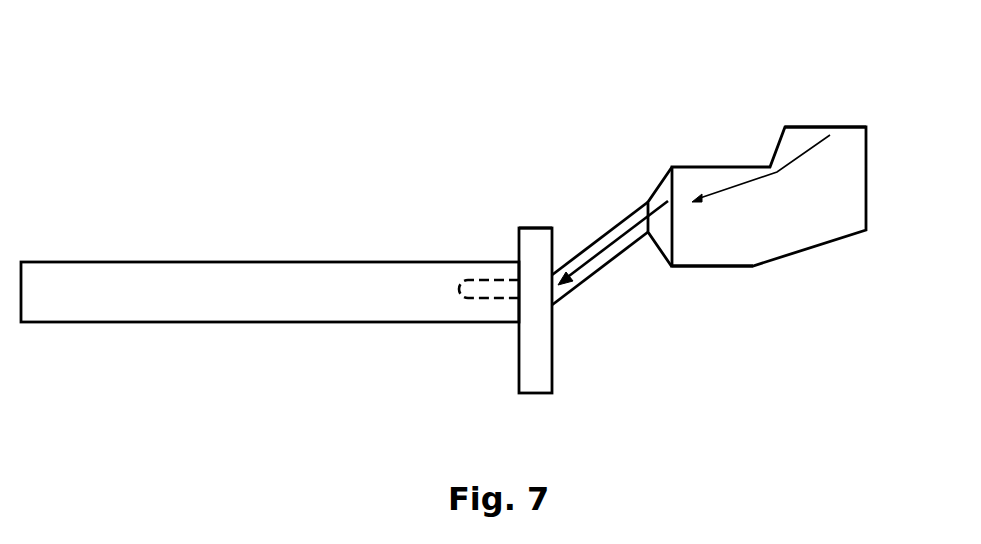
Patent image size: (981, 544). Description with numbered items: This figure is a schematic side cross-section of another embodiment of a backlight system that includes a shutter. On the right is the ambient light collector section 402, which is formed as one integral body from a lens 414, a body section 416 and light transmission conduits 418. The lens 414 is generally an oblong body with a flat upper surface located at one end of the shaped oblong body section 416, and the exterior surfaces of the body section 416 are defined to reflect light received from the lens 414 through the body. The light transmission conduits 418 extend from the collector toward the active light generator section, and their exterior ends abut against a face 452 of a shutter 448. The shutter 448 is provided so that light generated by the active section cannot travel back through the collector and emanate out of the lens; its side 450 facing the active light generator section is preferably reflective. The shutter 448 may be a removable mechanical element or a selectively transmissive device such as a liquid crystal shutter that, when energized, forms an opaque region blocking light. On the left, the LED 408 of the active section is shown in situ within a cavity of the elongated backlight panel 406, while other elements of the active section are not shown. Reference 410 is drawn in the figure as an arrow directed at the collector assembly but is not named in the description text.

The ambient light collector section 402 is at (825, 227).
The backlight panel 406 is at (144, 298).
The LED 408 is at (475, 300).
The instrument 410 is at (824, 109).
The lens 414 is at (857, 143).
The body section 416 is at (710, 243).
The light transmission conduits 418 is at (602, 257).
The shutter 448 is at (540, 381).
The reflective side of shutter 450 is at (514, 239).
The face of shutter 452 is at (558, 237).